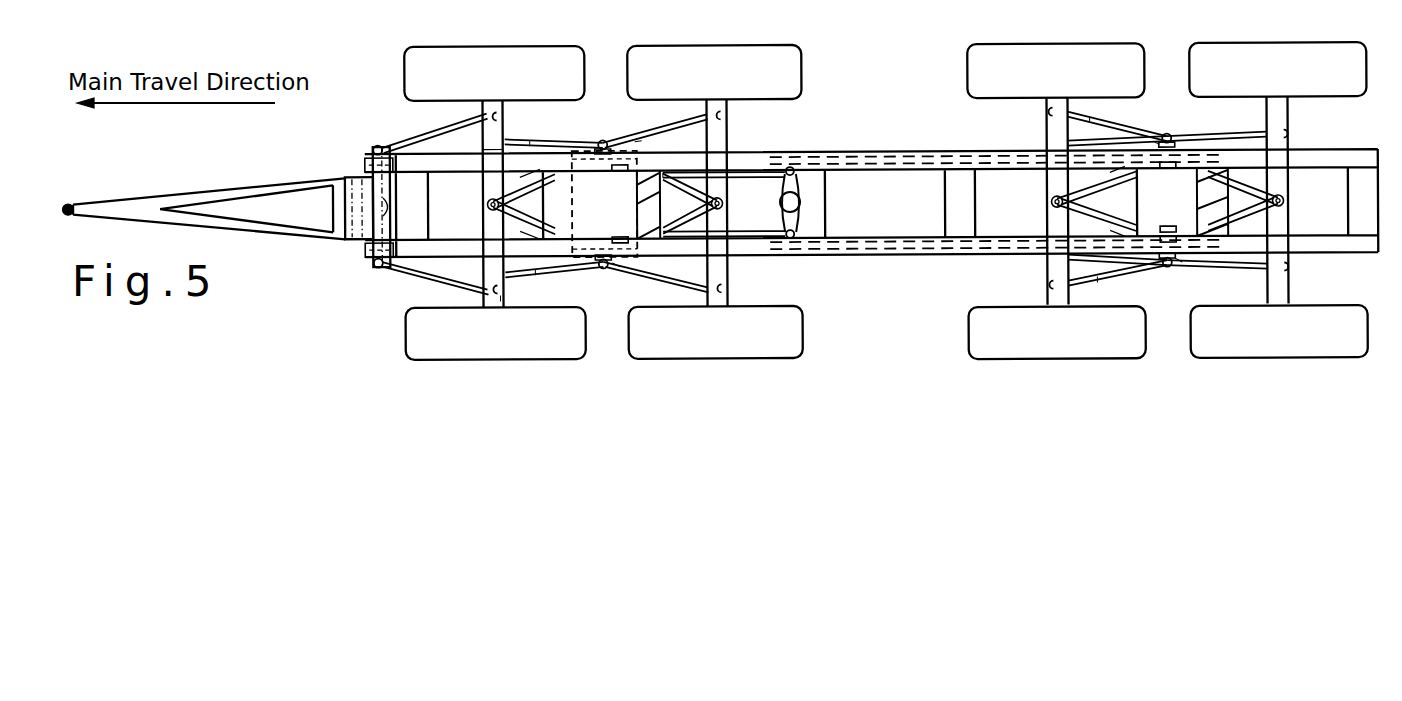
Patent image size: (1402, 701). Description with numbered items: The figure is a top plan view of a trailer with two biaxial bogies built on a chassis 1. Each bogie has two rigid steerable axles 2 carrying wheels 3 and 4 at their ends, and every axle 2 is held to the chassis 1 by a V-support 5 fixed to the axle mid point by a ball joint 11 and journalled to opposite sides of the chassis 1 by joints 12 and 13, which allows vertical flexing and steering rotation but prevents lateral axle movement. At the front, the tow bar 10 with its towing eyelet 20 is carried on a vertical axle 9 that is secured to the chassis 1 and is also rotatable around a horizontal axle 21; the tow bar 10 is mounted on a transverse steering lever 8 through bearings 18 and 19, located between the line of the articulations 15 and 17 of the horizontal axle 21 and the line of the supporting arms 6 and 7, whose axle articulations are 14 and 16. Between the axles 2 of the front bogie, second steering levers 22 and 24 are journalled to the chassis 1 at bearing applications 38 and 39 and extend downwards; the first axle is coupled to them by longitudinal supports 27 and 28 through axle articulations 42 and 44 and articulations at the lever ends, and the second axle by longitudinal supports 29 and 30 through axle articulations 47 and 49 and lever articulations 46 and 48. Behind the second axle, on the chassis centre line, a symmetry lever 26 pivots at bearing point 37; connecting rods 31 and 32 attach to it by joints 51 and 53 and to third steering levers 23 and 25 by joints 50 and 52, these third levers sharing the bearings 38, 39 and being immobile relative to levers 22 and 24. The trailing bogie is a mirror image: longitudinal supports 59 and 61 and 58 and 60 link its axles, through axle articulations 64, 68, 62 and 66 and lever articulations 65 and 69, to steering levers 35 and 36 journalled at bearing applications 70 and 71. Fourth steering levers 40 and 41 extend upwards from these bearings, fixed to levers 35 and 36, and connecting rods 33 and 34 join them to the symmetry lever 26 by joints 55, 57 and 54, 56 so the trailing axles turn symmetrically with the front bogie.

The chassis 1 is at (860, 257).
The axle 2 is at (493, 104).
The wheel 3 is at (410, 338).
The wheel 4 is at (415, 72).
The V-support 5 is at (492, 212).
The supporting arm 6 is at (425, 281).
The supporting arm 7 is at (430, 137).
The steering lever 8 is at (372, 152).
The vertical axle 9 is at (352, 205).
The tow bar 10 is at (196, 192).
The ball joint 11 is at (487, 200).
The joint 12 is at (612, 240).
The joint 13 is at (545, 142).
The articulation 14 is at (492, 298).
The articulation 15 is at (378, 268).
The articulation 16 is at (495, 112).
The articulation 17 is at (378, 145).
The bearing 18 is at (365, 246).
The bearing 19 is at (372, 172).
The towing eyelet 20 is at (72, 203).
The horizontal axle 21 is at (400, 228).
The second steering lever 22 is at (556, 268).
The third steering lever 23 is at (630, 246).
The second steering lever 24 is at (592, 150).
The third steering lever 25 is at (532, 202).
The symmetry lever 26 is at (798, 182).
The longitudinal support 27 is at (536, 276).
The longitudinal support 28 is at (532, 140).
The longitudinal support 29 is at (670, 282).
The longitudinal support 30 is at (668, 126).
The connecting rod 31 is at (760, 240).
The connecting rod 32 is at (745, 172).
The connecting rod 33 is at (1000, 252).
The connecting rod 34 is at (1000, 158).
The steering lever 35 is at (1115, 278).
The steering lever 36 is at (1160, 146).
The bearing point 37 is at (826, 195).
The bearing application 38 is at (608, 270).
The bearing application 39 is at (640, 145).
The fourth steering lever 40 is at (1122, 201).
The fourth steering lever 41 is at (1214, 202).
The axle articulation 42 is at (504, 300).
The axle articulation 44 is at (491, 152).
The steering lever articulation 46 is at (603, 270).
The axle articulation 47 is at (726, 294).
The steering lever articulation 48 is at (603, 141).
The axle articulation 49 is at (726, 116).
The joint 50 is at (650, 205).
The joint 51 is at (826, 226).
The joint 52 is at (626, 180).
The joint 53 is at (788, 178).
The joint 54 is at (795, 241).
The joint 55 is at (1170, 240).
The joint 56 is at (790, 168).
The joint 57 is at (1176, 172).
The longitudinal support 58 is at (1240, 272).
The longitudinal support 59 is at (1100, 286).
The longitudinal support 60 is at (1235, 135).
The longitudinal support 61 is at (1092, 122).
The axle articulation 62 is at (1288, 272).
The axle articulation 64 is at (1056, 292).
The steering lever articulation 65 is at (1167, 271).
The axle articulation 66 is at (1288, 139).
The axle articulation 68 is at (1050, 117).
The steering lever articulation 69 is at (1167, 137).
The bearing application 70 is at (1150, 136).
The bearing application 71 is at (1180, 266).